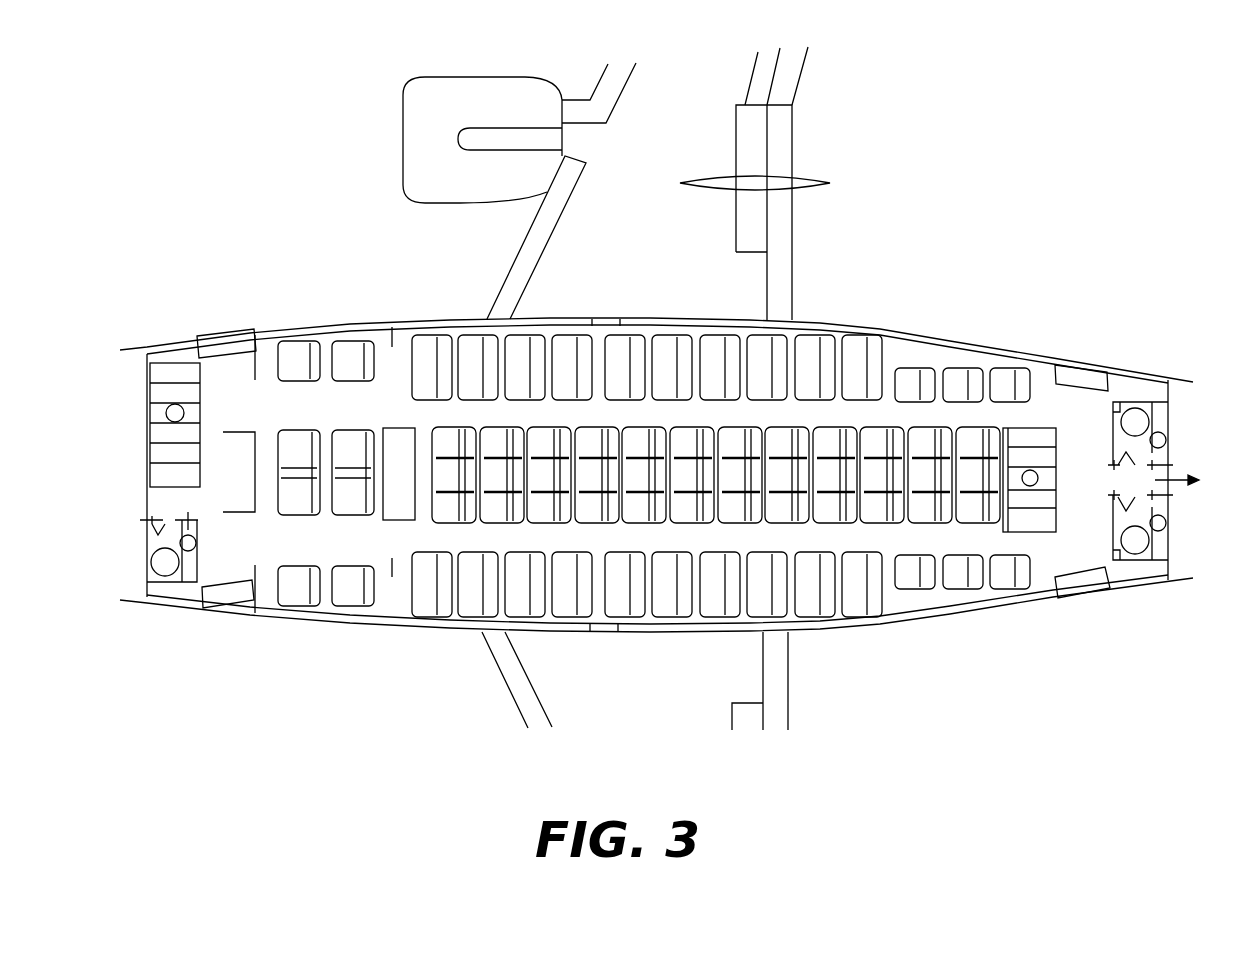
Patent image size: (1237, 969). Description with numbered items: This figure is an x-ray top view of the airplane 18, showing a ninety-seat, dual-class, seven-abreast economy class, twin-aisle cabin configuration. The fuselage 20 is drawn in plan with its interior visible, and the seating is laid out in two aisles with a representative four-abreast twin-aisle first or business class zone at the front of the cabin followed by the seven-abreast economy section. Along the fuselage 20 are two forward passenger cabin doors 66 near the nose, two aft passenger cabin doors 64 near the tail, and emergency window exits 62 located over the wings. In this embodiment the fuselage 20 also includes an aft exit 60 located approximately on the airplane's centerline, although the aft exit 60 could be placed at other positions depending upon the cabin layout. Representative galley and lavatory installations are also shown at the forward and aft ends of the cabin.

The airplane 18 is at (1034, 190).
The fuselage 20 is at (873, 320).
The aft exit 60 is at (1178, 479).
The emergency window exits 62 is at (608, 319).
The aft passenger cabin doors 64 is at (1093, 366).
The forward passenger cabin doors 66 is at (215, 332).